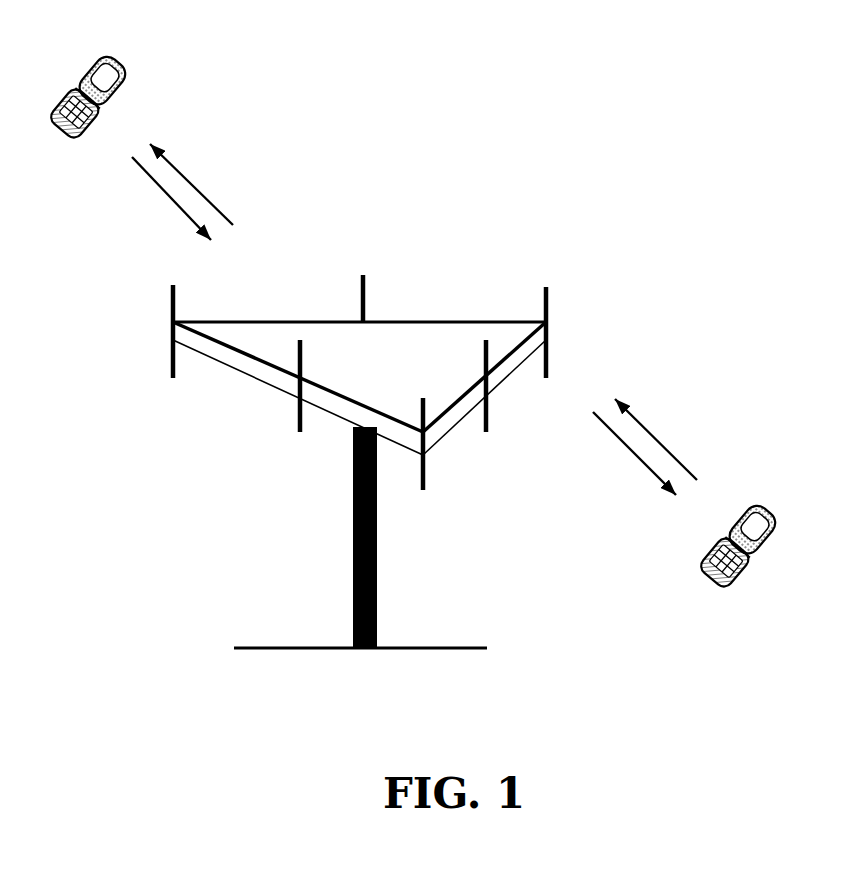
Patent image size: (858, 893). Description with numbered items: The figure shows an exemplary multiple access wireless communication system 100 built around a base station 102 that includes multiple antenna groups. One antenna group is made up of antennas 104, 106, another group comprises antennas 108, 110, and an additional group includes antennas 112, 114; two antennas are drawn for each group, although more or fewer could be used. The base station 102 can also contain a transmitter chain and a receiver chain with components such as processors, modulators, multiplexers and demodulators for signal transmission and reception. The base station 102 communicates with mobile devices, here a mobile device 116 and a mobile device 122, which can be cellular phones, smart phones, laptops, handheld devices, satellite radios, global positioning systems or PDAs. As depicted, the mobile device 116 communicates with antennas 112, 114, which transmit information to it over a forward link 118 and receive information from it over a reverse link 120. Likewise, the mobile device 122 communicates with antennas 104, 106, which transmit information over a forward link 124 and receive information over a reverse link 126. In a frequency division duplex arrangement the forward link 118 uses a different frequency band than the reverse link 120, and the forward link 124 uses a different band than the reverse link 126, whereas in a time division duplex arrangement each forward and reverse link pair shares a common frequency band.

The wireless communication system 100 is at (515, 101).
The base station 102 is at (377, 650).
The antenna 104 is at (546, 295).
The antenna 106 is at (486, 406).
The antenna 108 is at (423, 468).
The antenna 110 is at (300, 430).
The antenna 112 is at (173, 292).
The antenna 114 is at (363, 288).
The mobile device 116 is at (98, 57).
The forward link 118 is at (193, 182).
The reverse link 120 is at (182, 212).
The mobile device 122 is at (745, 505).
The forward link 124 is at (640, 463).
The reverse link 126 is at (650, 432).